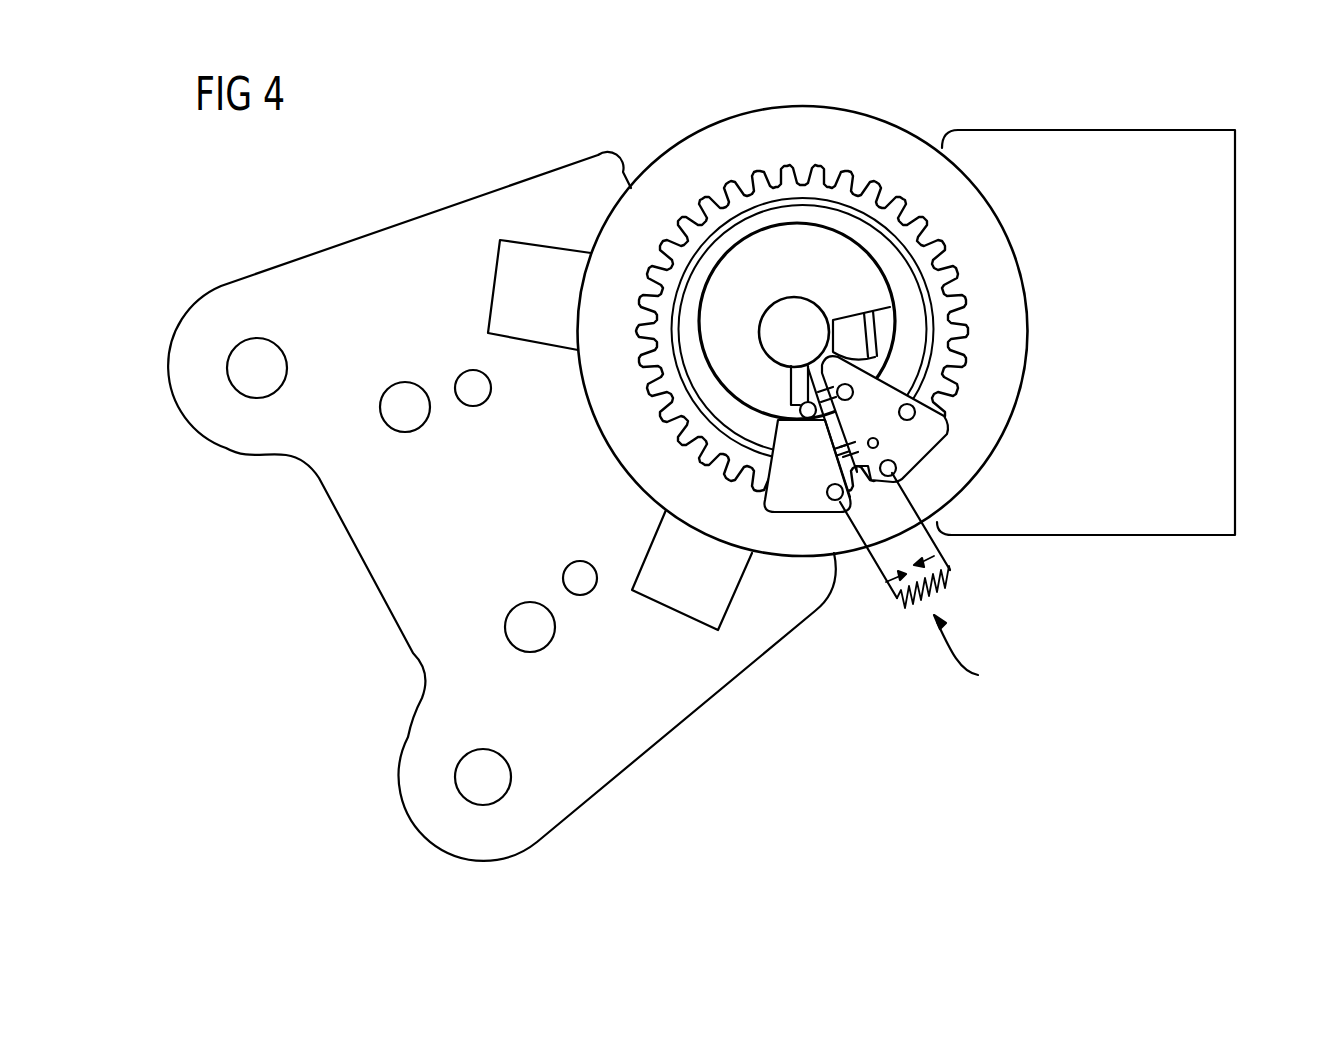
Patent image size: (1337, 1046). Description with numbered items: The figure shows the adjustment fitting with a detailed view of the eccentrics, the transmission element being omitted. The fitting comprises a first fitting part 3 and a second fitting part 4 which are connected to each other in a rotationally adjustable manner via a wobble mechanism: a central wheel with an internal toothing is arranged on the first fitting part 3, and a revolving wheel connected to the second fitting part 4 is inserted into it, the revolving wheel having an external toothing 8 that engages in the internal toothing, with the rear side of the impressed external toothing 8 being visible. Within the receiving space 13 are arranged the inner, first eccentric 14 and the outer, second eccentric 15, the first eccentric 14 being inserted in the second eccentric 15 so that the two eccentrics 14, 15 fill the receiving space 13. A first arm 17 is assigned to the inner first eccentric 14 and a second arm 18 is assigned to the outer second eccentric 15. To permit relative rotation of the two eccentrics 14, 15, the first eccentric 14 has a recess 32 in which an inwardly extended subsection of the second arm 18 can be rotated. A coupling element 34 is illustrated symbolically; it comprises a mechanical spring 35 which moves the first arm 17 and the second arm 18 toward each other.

The first fitting part 3 is at (1193, 340).
The second fitting part 4 is at (405, 258).
The external toothing 8 is at (878, 187).
The receiving space 13 is at (800, 200).
The first eccentric 14 is at (770, 257).
The second eccentric 15 is at (893, 255).
The first arm 17 is at (802, 490).
The second arm 18 is at (908, 442).
The recess 32 is at (880, 340).
The coupling element 34 is at (972, 655).
The mechanical spring 35 is at (897, 613).